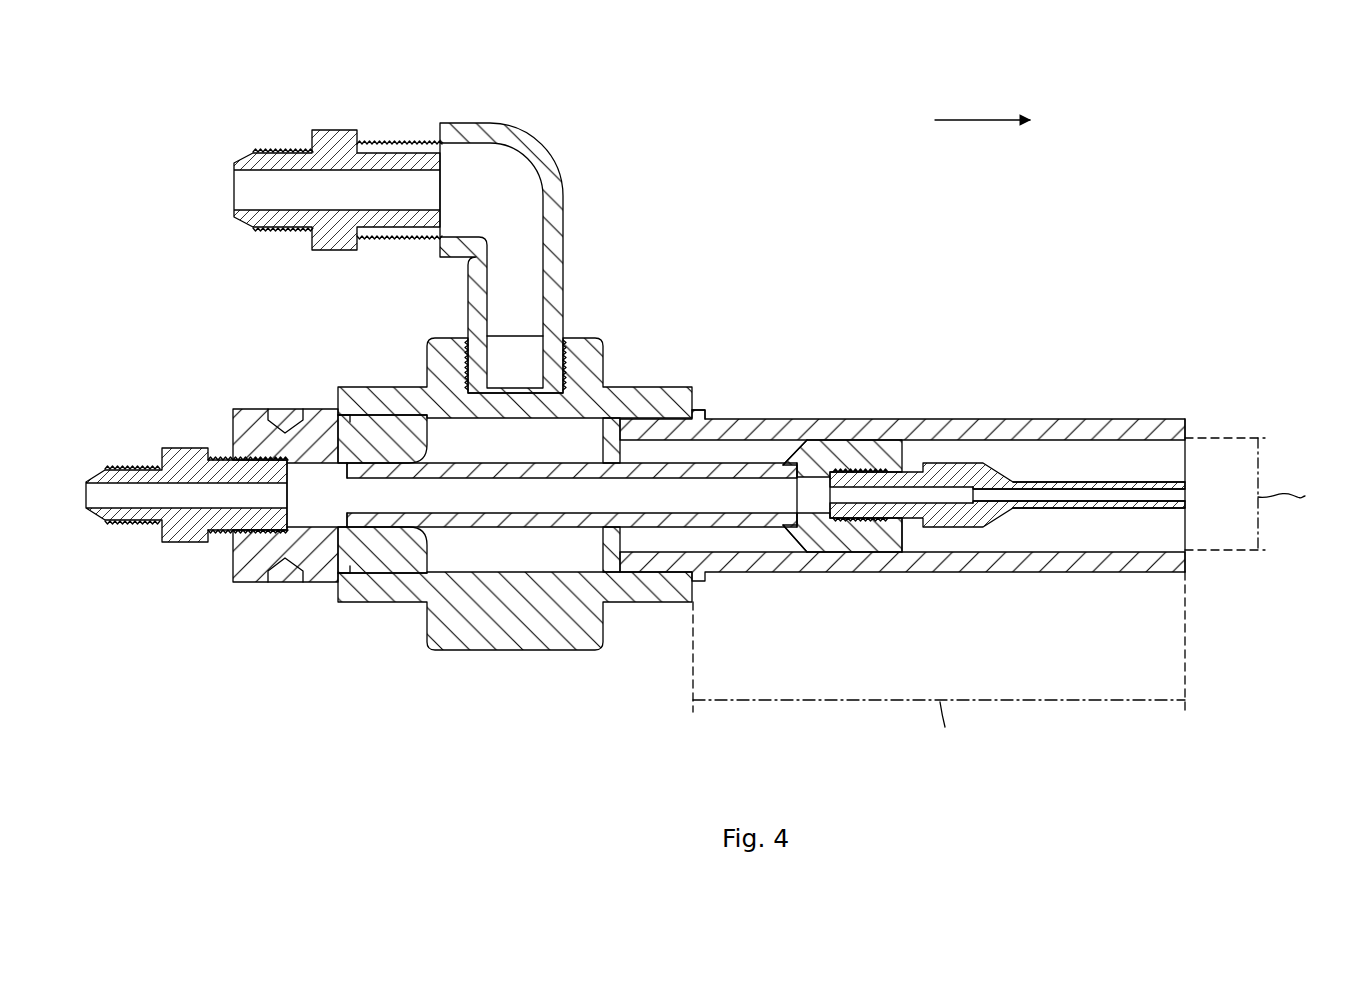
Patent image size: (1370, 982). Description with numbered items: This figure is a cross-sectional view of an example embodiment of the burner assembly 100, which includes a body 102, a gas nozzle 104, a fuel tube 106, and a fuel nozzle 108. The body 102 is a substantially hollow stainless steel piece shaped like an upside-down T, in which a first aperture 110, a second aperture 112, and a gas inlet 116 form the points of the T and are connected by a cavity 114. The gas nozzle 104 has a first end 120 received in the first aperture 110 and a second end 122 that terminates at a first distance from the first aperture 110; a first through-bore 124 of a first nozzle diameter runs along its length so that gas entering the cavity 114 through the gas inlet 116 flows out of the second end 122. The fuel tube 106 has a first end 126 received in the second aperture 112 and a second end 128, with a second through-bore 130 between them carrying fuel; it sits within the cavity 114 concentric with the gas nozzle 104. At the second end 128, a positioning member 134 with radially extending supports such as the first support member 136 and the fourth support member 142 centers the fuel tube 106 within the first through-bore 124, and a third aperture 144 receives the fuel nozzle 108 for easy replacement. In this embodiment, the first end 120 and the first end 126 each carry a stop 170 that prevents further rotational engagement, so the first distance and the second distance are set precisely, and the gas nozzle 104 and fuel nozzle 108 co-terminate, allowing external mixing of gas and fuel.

The burner assembly 100 is at (707, 120).
The body 102 is at (603, 347).
The gas nozzle 104 is at (1025, 419).
The fuel tube 106 is at (257, 407).
The fuel nozzle 108 is at (930, 477).
The first aperture 110 is at (620, 545).
The second aperture 112 is at (418, 550).
The cavity 114 is at (539, 557).
The gas inlet 116 is at (462, 337).
The first end 120 is at (648, 432).
The second end 122 is at (1108, 418).
The first through-bore 124 is at (1044, 539).
The first end 126 is at (272, 592).
The second end 128 is at (772, 540).
The second through-bore 130 is at (579, 507).
The positioning member 134 is at (847, 462).
The first support member 136 is at (812, 465).
The fourth support member 142 is at (878, 527).
The third aperture 144 is at (822, 497).
The stop 170 is at (338, 392).